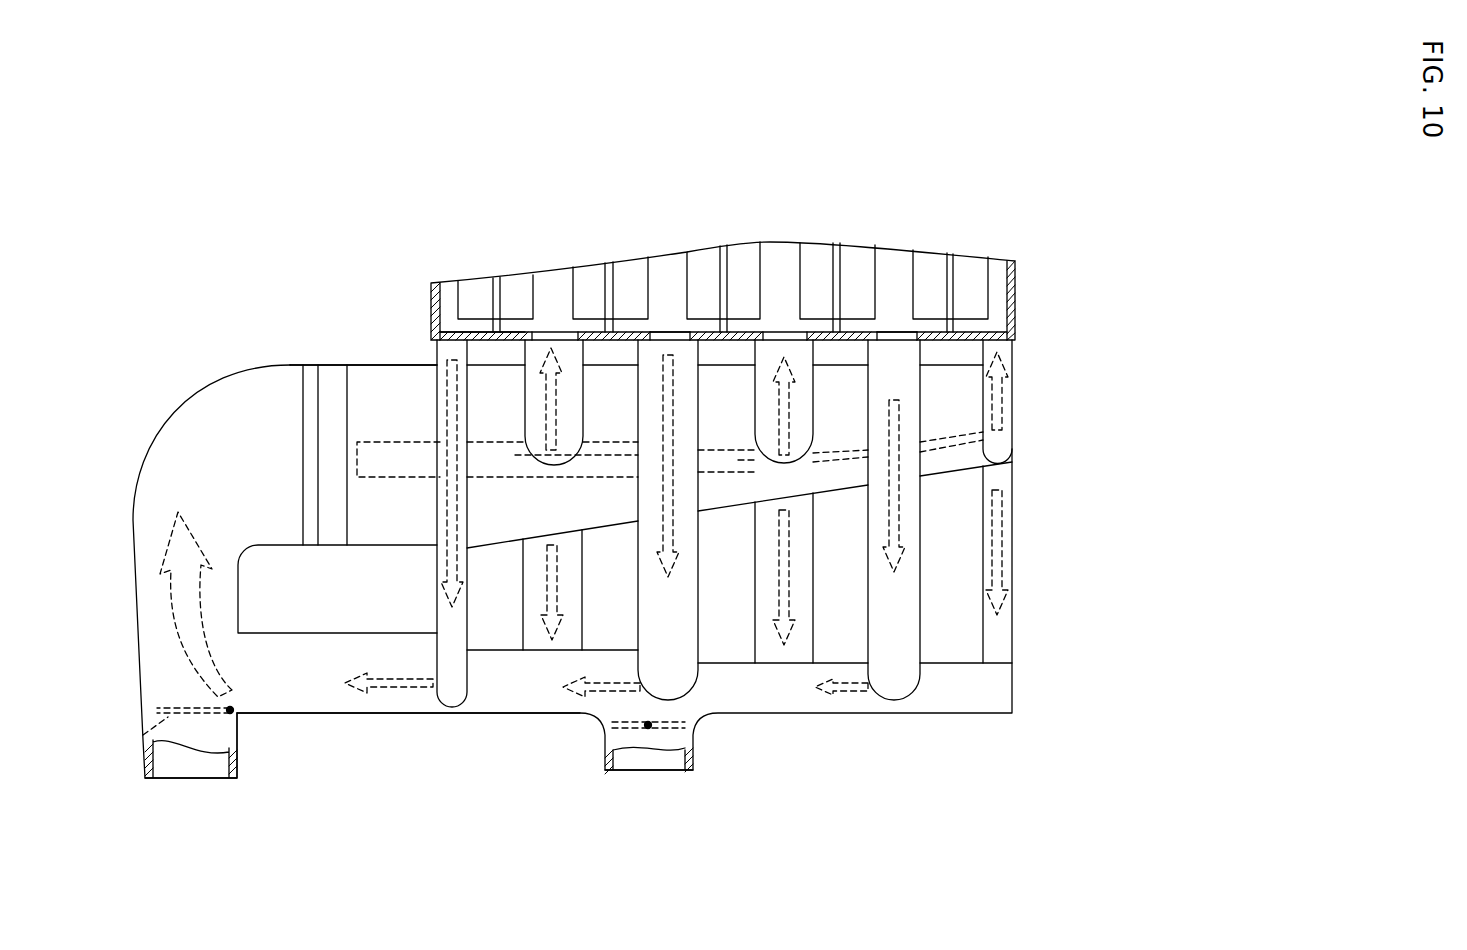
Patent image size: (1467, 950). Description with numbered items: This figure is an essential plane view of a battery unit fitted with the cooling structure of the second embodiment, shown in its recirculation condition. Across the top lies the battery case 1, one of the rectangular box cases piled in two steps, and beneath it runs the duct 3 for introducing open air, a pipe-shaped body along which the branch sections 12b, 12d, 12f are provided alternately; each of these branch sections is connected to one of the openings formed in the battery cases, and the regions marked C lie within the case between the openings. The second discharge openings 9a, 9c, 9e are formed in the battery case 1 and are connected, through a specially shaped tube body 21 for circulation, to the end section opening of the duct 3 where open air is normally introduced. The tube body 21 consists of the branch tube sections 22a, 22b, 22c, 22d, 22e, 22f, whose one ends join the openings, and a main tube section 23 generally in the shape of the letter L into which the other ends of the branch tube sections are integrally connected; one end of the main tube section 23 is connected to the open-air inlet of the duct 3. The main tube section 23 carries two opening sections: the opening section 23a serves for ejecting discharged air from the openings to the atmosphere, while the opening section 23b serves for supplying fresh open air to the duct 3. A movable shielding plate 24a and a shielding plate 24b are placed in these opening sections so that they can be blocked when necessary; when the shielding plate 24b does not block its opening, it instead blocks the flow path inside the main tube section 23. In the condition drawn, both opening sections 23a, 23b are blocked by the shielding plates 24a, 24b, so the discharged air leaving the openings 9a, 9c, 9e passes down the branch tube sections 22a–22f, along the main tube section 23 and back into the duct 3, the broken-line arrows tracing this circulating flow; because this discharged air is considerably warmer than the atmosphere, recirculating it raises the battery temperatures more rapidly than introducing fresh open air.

The battery case 1 is at (1017, 307).
The duct for introducing open air 3 is at (373, 362).
The opening 9a is at (450, 335).
The opening 9c is at (663, 345).
The opening 9e is at (893, 345).
The branch section 12b is at (588, 405).
The branch section 12d is at (817, 402).
The branch section 12f is at (1010, 407).
The tube body for circulation 21 is at (488, 745).
The branch tube section 22a is at (437, 597).
The branch tube section 22b is at (582, 602).
The branch tube section 22c is at (697, 623).
The branch tube section 22d is at (813, 617).
The branch tube section 22e is at (922, 615).
The branch tube section 22f is at (1010, 567).
The main tube section 23 is at (350, 715).
The opening section 23a is at (690, 768).
The opening section 23b is at (157, 765).
The shielding plate 24a is at (630, 746).
The shielding plate 24b is at (150, 738).
The cylinder C is at (513, 300).